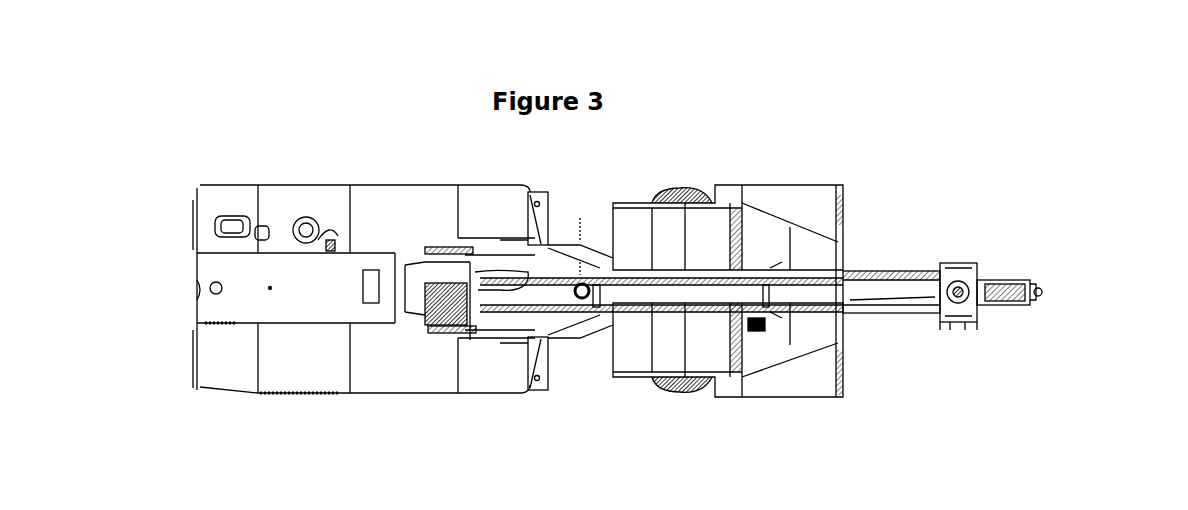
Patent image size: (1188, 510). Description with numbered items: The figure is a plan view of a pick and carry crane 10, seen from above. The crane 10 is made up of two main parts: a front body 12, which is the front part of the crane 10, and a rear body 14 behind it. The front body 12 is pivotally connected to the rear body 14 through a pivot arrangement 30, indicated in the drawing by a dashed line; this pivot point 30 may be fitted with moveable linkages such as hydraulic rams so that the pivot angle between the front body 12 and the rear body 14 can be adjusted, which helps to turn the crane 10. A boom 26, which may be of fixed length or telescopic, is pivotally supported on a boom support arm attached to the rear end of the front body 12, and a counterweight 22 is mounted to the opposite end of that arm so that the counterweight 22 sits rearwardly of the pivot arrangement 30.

The pick and carry crane 10 is at (1056, 228).
The front body 12 is at (826, 158).
The rear body 14 is at (263, 165).
The counterweight 22 is at (497, 237).
The boom 26 is at (875, 252).
The pivot arrangement 30 is at (582, 310).